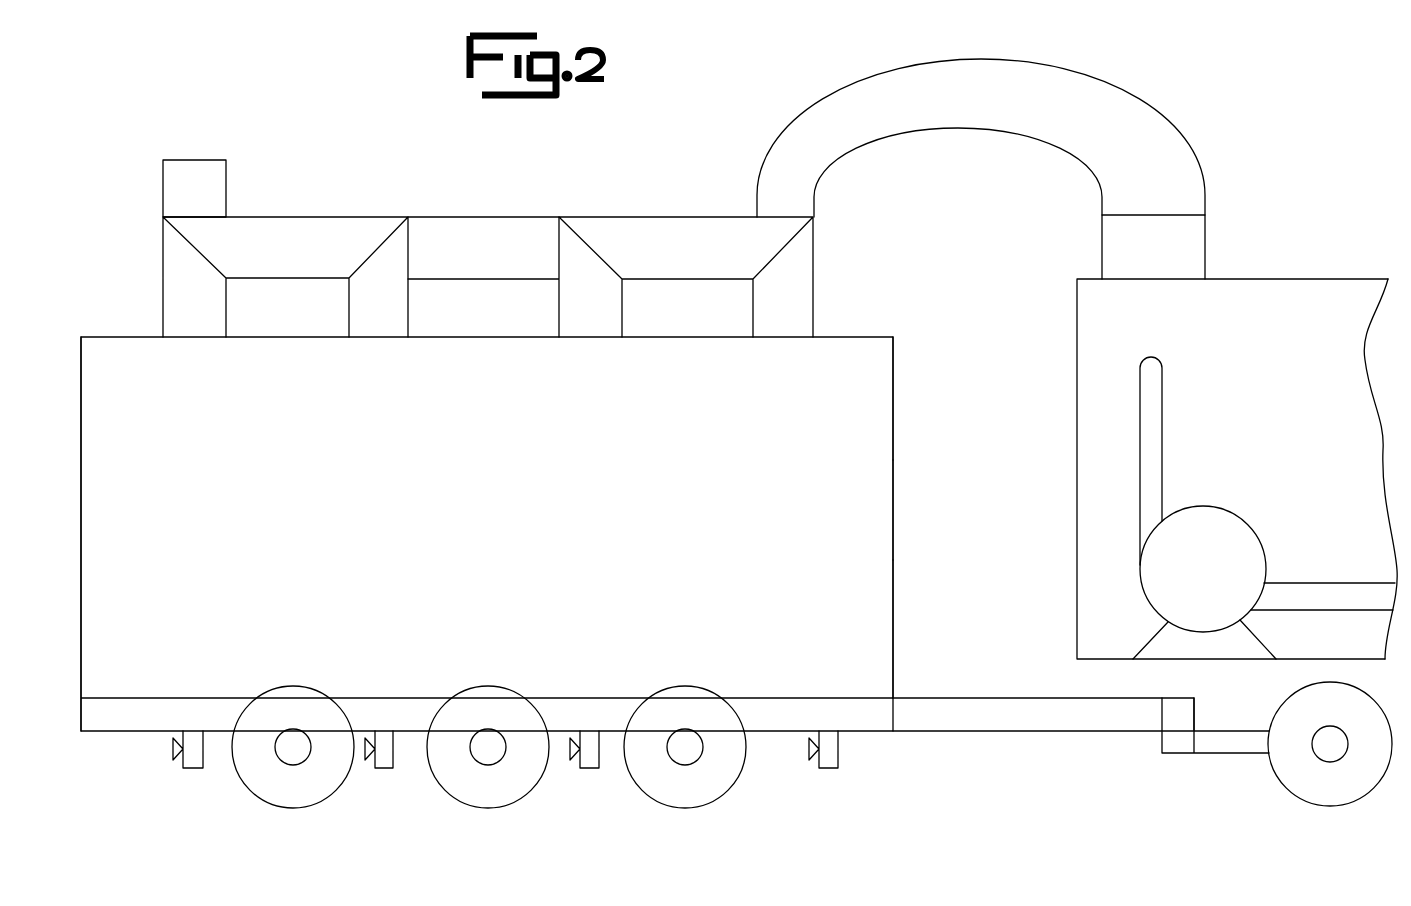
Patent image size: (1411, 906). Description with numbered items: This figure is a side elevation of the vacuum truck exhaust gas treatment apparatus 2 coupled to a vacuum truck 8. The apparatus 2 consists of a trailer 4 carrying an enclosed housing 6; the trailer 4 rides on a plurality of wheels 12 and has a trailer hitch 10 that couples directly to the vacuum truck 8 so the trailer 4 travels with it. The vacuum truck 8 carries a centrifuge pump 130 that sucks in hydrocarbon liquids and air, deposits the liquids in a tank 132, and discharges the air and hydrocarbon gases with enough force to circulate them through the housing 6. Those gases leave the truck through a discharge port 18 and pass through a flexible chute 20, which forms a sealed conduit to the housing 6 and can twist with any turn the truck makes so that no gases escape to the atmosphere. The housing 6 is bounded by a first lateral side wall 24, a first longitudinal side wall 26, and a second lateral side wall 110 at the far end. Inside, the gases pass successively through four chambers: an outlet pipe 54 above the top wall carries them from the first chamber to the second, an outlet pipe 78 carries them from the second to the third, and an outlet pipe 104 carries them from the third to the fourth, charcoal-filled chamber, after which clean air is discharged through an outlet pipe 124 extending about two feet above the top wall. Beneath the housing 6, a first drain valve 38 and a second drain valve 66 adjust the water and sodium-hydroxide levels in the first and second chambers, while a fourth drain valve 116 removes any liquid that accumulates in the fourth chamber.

The vacuum truck exhaust gas treatment apparatus 2 is at (897, 318).
The trailer 4 is at (987, 718).
The enclosed housing 6 is at (900, 443).
The vacuum truck 8 is at (1368, 274).
The trailer hitch 10 is at (1196, 705).
The wheels 12 is at (657, 782).
The discharge port 18 is at (1147, 213).
The flexible chute 20 is at (1168, 108).
The first lateral side wall 24 is at (893, 533).
The first longitudinal side wall 26 is at (878, 607).
The first drain valve 38 is at (840, 750).
The outlet pipe 54 is at (662, 228).
The second drain valve 66 is at (590, 770).
The outlet pipe 78 is at (484, 228).
The outlet pipe 104 is at (297, 225).
The second lateral side wall 110 is at (78, 525).
The fourth drain valve 116 is at (190, 770).
The outlet pipe 124 is at (200, 168).
The centrifuge pump 130 is at (1258, 548).
The tank 132 is at (1242, 290).